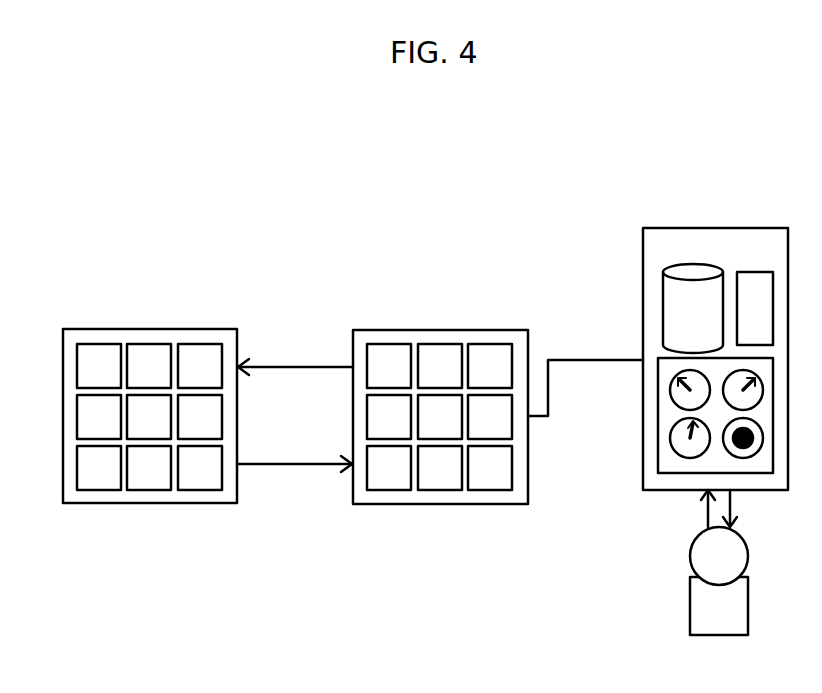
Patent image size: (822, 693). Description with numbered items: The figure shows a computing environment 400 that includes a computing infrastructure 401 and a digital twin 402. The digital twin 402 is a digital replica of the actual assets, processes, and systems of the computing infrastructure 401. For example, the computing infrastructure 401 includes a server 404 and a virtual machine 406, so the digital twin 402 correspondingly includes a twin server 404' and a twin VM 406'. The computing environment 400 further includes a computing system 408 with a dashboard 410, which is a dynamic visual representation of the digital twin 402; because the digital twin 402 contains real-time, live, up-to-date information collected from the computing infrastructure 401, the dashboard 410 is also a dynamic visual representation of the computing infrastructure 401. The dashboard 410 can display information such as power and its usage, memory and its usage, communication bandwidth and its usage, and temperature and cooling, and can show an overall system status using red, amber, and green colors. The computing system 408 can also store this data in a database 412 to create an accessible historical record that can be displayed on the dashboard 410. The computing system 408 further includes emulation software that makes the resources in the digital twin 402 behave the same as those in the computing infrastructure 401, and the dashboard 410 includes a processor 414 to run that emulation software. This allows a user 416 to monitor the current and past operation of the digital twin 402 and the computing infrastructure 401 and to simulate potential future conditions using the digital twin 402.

The computing environment 400 is at (496, 210).
The computing infrastructure 401 is at (140, 318).
The digital twin 402 is at (404, 318).
The server 404 is at (70, 502).
The virtual machine 406 is at (171, 502).
The twin server 404' is at (355, 502).
The twin VM 406' is at (458, 502).
The computing system 408 is at (632, 264).
The dashboard 410 is at (658, 440).
The database 412 is at (693, 264).
The processor 414 is at (755, 272).
The user 416 is at (690, 620).